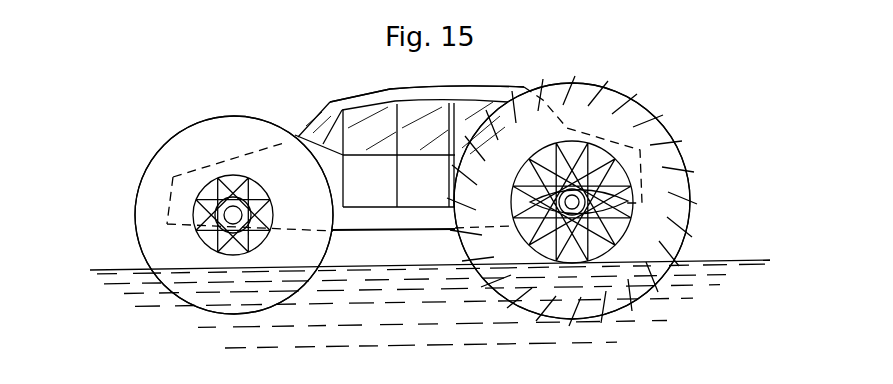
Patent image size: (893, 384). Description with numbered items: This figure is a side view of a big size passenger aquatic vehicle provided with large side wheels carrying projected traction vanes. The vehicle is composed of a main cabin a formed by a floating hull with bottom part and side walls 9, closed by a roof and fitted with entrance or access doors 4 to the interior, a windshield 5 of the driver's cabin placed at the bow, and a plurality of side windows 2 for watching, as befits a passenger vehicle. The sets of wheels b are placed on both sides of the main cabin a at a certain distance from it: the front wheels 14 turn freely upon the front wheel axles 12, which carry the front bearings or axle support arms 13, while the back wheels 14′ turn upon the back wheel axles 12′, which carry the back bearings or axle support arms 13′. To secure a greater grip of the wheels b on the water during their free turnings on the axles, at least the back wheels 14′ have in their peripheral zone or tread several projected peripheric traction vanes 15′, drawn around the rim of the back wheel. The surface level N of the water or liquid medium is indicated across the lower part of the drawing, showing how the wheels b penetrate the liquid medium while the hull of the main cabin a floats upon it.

The side windows 2 is at (467, 108).
The doors 4 is at (377, 196).
The windshield 5 is at (322, 120).
The hull and walls of main cabin 9 is at (404, 89).
The front wheel axles 12 is at (213, 208).
The axle support arm 13 is at (233, 215).
The front wheels 14 is at (230, 121).
The back wheel axles 12′ is at (557, 204).
The axle support arm 13′ is at (575, 202).
The back wheels 14′ is at (610, 113).
The peripheric traction vanes 15′ is at (577, 76).
The main cabin a is at (341, 91).
The sets of wheels b is at (166, 136).
The water or liquid medium surface level N is at (116, 270).